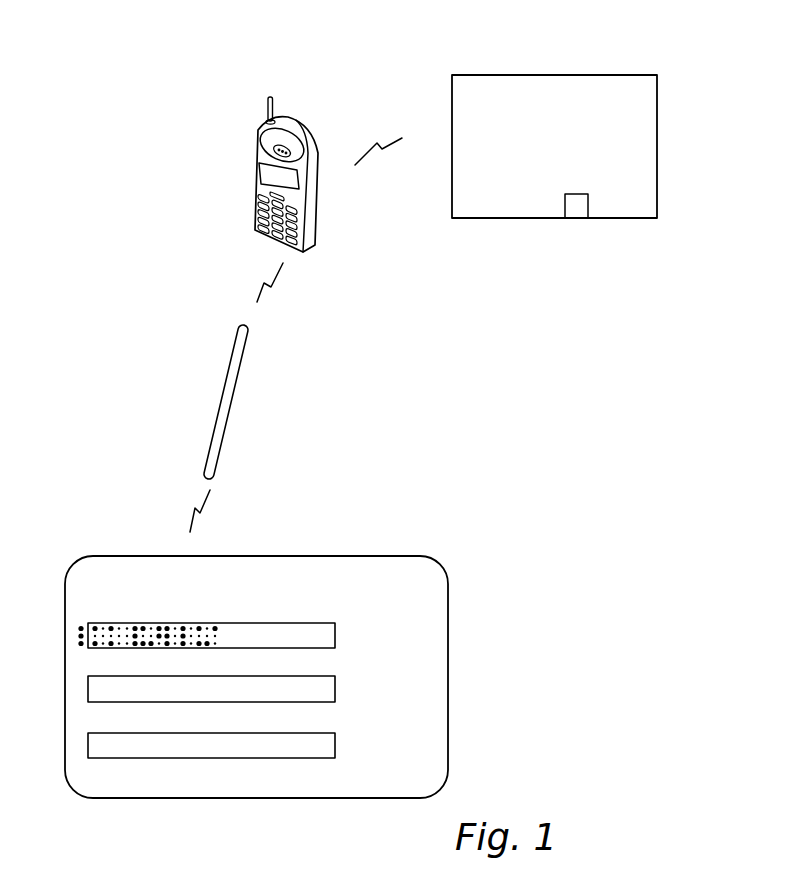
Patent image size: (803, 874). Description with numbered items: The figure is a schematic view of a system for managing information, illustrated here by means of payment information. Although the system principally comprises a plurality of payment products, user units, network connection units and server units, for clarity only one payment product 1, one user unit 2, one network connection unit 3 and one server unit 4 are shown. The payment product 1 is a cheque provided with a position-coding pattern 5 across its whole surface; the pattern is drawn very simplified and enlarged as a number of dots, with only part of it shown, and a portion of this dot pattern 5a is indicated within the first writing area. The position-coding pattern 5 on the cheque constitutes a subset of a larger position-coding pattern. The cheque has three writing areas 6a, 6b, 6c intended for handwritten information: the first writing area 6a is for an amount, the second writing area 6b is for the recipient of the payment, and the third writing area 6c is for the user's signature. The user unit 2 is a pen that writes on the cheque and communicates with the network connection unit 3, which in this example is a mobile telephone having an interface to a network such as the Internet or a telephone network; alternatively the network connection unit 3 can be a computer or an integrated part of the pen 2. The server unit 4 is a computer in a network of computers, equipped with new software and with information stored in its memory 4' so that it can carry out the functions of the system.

The payment product 1 is at (448, 618).
The user unit 2 is at (242, 352).
The network connection unit 3 is at (315, 207).
The server unit 4 is at (586, 146).
The memory 4' is at (602, 231).
The position-coding pattern 5 is at (80, 643).
The position-coding pattern area in field 5a is at (205, 622).
The first writing area 6a is at (335, 628).
The second writing area 6b is at (335, 683).
The third writing area 6c is at (335, 740).